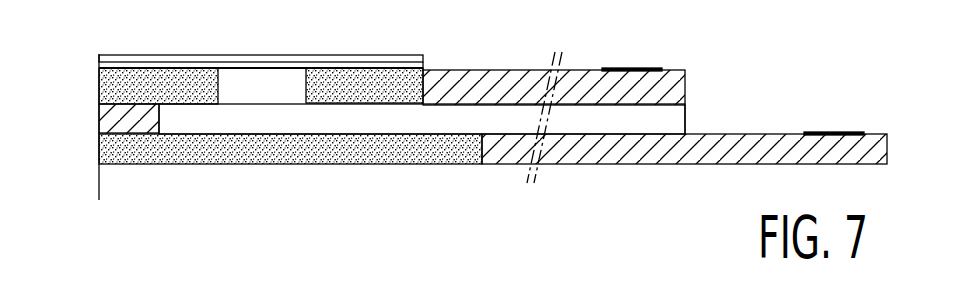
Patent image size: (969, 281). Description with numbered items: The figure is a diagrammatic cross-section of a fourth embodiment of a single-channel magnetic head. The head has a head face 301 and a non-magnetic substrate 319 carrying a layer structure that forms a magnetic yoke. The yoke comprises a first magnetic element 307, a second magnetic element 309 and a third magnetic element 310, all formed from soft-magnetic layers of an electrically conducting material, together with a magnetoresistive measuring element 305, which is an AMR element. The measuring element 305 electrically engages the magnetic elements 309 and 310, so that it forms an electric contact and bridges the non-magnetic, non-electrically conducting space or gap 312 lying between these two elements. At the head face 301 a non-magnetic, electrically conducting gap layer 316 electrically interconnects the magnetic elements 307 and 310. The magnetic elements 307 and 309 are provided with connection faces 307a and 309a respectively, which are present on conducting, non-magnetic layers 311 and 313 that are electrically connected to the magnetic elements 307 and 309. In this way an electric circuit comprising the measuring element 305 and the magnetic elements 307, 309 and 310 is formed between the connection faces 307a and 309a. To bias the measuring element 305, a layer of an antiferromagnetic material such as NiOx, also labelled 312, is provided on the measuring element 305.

The head face 301 is at (100, 148).
The magnetoresistive measuring element 305 is at (286, 68).
The first magnetic element 307 is at (342, 155).
The connection face 307a is at (839, 132).
The second magnetic element 309 is at (368, 90).
The connection face 309a is at (628, 66).
The third magnetic element 310 is at (144, 80).
The conducting, non-magnetic layer 311 is at (673, 164).
The gap 312 is at (198, 60).
The conducting, non-magnetic layer 313 is at (492, 85).
The gap layer 316 is at (110, 115).
The non-magnetic substrate 319 is at (118, 178).